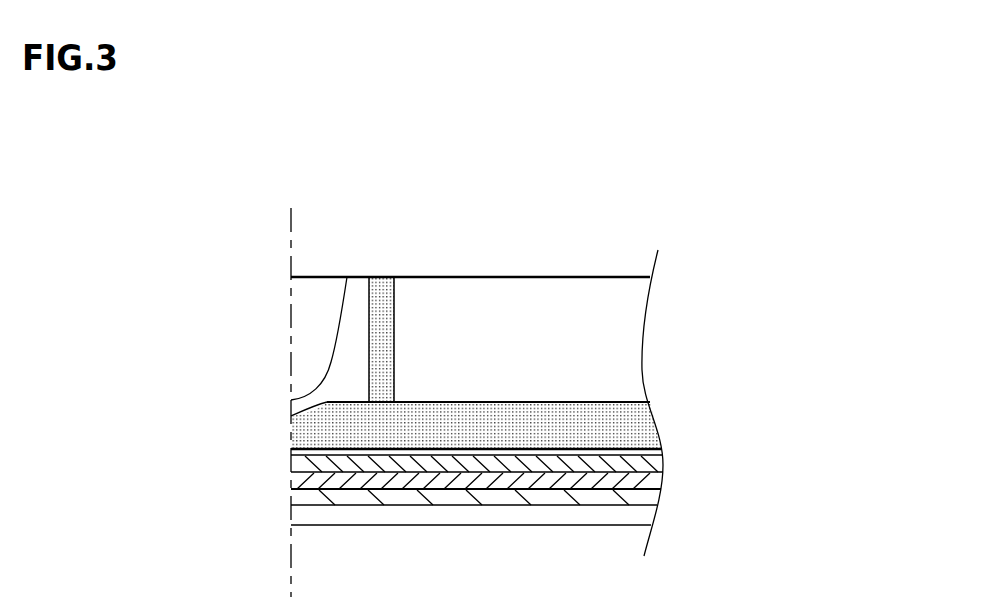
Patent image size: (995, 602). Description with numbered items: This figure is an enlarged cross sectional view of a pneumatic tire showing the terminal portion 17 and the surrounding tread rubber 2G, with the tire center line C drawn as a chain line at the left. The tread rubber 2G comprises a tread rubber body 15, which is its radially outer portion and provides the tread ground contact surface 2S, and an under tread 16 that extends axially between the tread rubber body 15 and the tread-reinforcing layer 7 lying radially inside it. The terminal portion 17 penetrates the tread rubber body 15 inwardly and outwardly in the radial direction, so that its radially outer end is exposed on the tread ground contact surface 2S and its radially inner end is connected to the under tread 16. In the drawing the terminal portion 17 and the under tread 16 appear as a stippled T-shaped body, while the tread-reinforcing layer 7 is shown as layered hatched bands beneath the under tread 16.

The tire equatorial center line C is at (291, 250).
The tread ground contact surface 2S is at (414, 276).
The tread rubber 2G is at (476, 261).
The terminal portion 17 is at (395, 340).
The tread rubber body 15 is at (548, 313).
The under tread 16 is at (595, 432).
The tread-reinforcing layer 7 is at (670, 452).